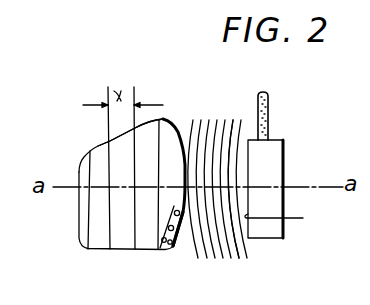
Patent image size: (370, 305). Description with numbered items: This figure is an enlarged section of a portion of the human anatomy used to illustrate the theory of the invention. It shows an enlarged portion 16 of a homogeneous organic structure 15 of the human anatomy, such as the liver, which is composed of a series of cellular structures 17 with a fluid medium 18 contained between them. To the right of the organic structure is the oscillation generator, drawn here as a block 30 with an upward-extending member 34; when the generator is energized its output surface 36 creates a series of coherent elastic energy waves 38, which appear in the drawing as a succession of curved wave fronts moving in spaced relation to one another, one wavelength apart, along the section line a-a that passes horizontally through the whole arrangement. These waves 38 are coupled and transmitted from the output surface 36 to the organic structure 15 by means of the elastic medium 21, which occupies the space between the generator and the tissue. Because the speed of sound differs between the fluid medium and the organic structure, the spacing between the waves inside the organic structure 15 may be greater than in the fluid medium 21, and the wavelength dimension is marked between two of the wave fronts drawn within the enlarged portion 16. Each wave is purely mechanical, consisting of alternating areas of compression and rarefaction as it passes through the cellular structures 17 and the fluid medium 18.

The organic structure 15 is at (87, 254).
The enlarged portion 16 is at (98, 146).
The cellular structures 17 is at (165, 251).
The fluid medium 18 is at (178, 240).
The elastic medium 21 is at (226, 235).
The transducer block 30 is at (277, 155).
The lead rod 34 is at (268, 113).
The output surface 36 is at (290, 226).
The coherent elastic energy waves 38 is at (137, 243).